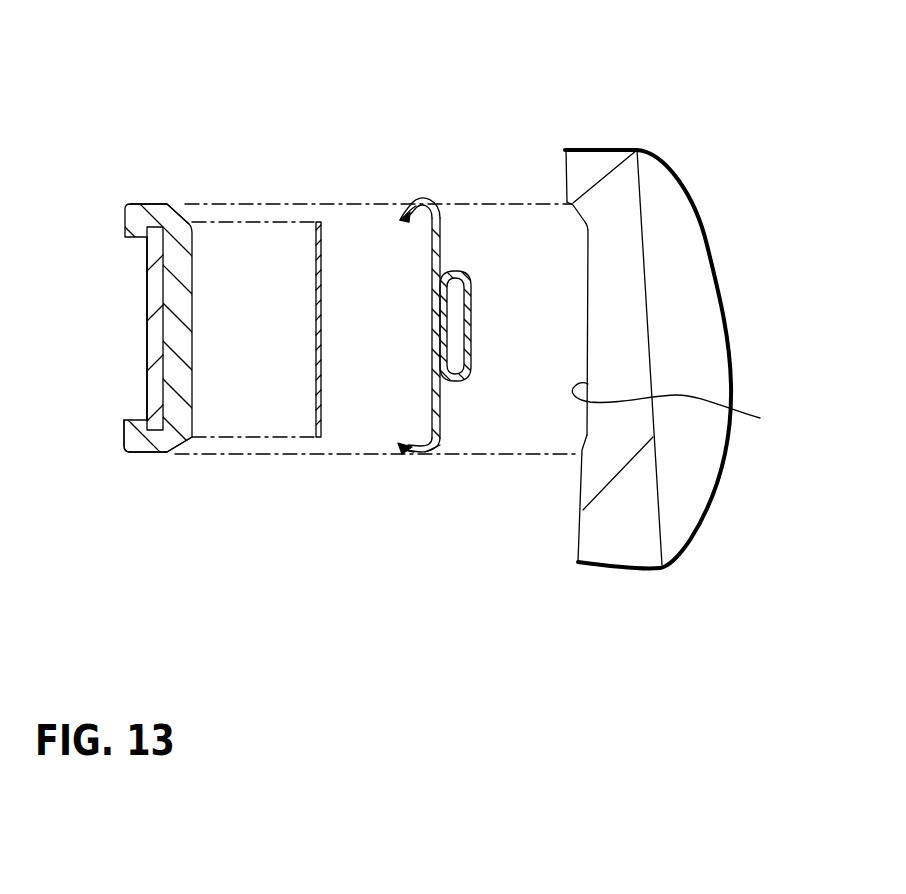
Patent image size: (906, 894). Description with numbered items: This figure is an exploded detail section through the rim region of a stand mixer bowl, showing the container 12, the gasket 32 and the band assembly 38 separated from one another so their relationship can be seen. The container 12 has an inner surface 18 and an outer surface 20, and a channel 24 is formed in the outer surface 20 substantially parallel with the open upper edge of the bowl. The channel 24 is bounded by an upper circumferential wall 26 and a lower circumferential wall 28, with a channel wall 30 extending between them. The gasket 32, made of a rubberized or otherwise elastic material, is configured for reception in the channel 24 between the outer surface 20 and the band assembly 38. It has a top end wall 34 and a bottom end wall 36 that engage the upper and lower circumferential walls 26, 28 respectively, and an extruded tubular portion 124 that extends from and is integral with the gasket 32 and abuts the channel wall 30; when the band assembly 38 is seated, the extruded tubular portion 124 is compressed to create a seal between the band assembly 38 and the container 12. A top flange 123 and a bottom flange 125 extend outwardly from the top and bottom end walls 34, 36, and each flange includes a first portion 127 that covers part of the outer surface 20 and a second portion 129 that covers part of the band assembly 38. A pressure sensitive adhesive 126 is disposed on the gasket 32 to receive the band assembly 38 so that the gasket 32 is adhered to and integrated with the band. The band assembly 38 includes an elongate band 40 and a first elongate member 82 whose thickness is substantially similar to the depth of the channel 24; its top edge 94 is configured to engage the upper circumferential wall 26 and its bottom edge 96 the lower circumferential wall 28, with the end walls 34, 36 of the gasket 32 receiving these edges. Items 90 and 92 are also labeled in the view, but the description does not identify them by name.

The container 12 is at (638, 315).
The inner surface 18 is at (698, 477).
The outer surface 20 is at (565, 173).
The channel 24 is at (588, 318).
The upper circumferential wall 26 is at (572, 213).
The lower circumferential wall 28 is at (575, 447).
The channel wall 30 is at (588, 288).
The gasket 32 is at (403, 323).
The top end wall 34 is at (417, 200).
The bottom end wall 36 is at (432, 456).
The band assembly 38 is at (202, 108).
The elongate band 40 is at (150, 312).
The first elongate member 82 is at (118, 357).
The bottom flange 90 is at (157, 454).
The seal line 92 is at (680, 406).
The top edge 94 is at (152, 203).
The bottom edge 96 is at (130, 452).
The top flange 123 is at (412, 208).
The extruded tubular portion 124 is at (458, 385).
The bottom flange 125 is at (400, 456).
The pressure sensitive adhesive 126 is at (317, 252).
The first portion 127 is at (410, 192).
The second portion 129 is at (398, 443).